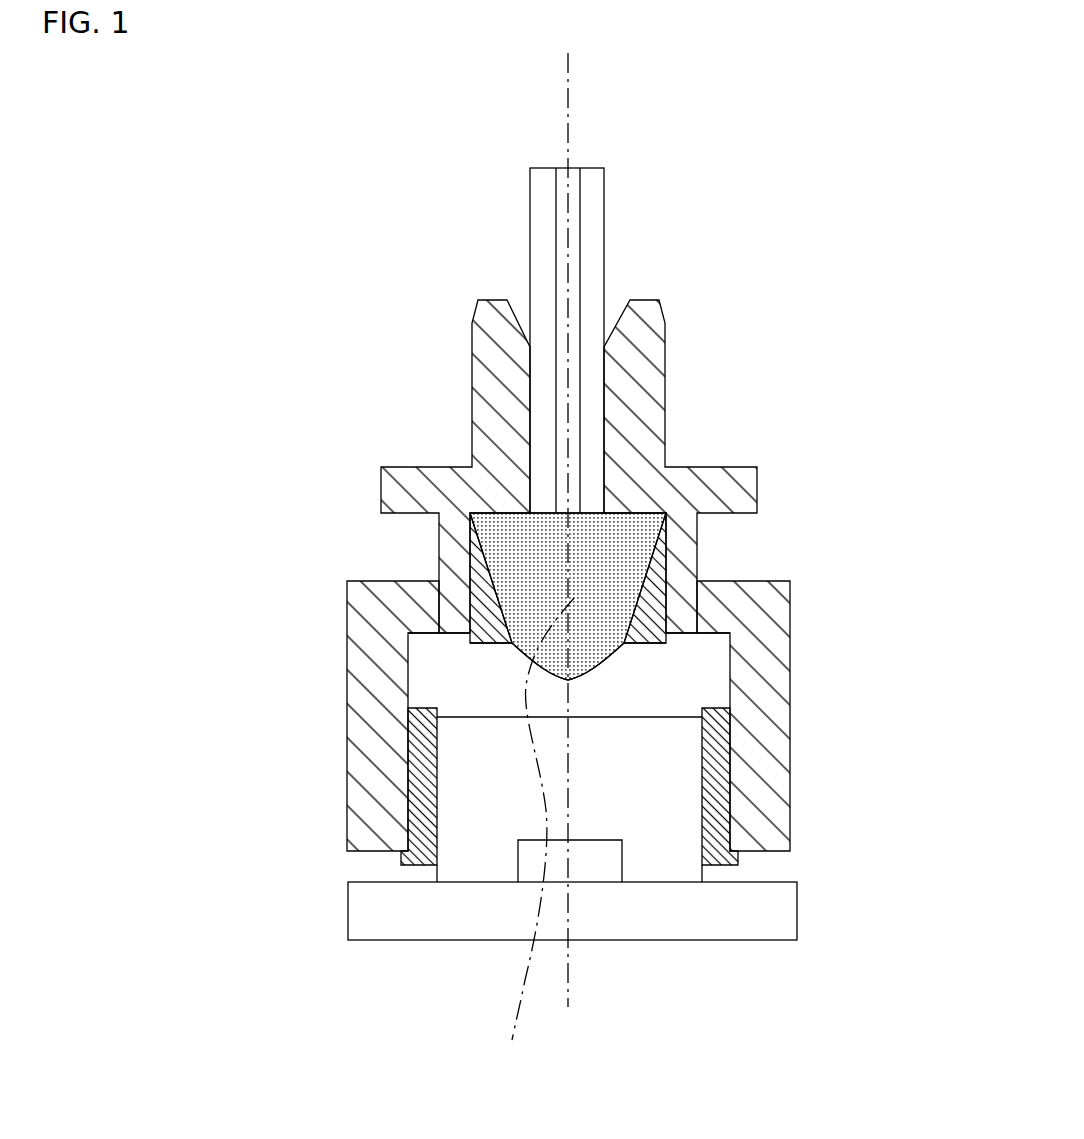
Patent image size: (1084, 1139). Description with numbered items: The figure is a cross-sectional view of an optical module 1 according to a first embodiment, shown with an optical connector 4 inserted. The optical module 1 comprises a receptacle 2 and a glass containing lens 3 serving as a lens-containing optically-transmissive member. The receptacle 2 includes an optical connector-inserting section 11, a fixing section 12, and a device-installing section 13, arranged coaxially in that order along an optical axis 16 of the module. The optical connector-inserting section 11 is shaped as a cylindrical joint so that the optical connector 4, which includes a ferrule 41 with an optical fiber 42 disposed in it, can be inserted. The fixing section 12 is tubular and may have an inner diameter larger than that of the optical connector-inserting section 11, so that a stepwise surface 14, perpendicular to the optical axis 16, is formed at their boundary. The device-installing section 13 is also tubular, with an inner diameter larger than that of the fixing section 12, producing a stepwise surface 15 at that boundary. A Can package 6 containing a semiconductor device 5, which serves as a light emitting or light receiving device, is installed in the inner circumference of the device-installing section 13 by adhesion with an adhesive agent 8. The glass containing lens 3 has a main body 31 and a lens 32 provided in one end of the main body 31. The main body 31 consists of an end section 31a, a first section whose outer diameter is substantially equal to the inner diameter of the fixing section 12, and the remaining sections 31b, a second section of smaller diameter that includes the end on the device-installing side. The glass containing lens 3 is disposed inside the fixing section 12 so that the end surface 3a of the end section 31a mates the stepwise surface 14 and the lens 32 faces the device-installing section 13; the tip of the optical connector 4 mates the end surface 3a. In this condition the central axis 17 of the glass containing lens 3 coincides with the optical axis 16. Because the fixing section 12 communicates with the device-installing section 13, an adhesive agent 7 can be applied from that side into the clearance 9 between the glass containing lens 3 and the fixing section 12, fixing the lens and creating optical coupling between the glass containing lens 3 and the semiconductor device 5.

The optical module 1 is at (192, 72).
The receptacle 2 is at (790, 767).
The glass containing lens 3 is at (519, 637).
The end surface 3a is at (568, 464).
The optical connector 4 is at (567, 318).
The semiconductor device 5 is at (597, 838).
The Can package 6 is at (457, 718).
The adhesive agent 7 is at (493, 650).
The adhesive agent 8 is at (720, 868).
The clearance 9 is at (652, 648).
The optical connector-inserting section 11 is at (537, 393).
The fixing section 12 is at (666, 580).
The device-installing section 13 is at (424, 804).
The stepwise surface 14 is at (592, 464).
The stepwise surface 15 is at (692, 629).
The optical axis 16 is at (568, 130).
The central axis 17 is at (531, 844).
The main body 31 is at (519, 559).
The end section 31a is at (484, 520).
The sections except the end section 31b is at (566, 578).
The lens 32 is at (582, 676).
The ferrule 41 is at (606, 416).
The optical fiber 42 is at (546, 217).